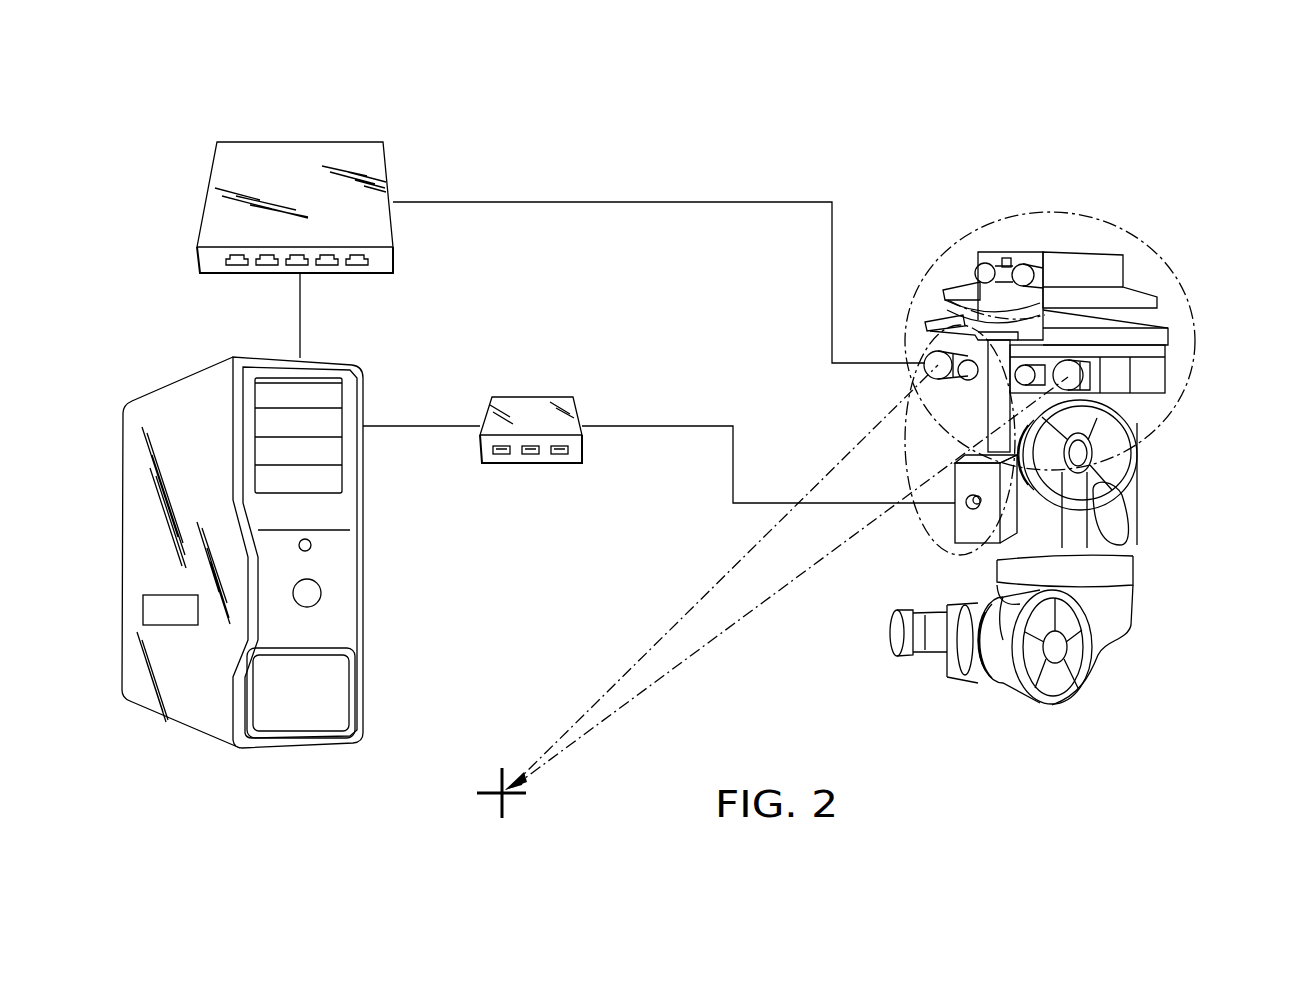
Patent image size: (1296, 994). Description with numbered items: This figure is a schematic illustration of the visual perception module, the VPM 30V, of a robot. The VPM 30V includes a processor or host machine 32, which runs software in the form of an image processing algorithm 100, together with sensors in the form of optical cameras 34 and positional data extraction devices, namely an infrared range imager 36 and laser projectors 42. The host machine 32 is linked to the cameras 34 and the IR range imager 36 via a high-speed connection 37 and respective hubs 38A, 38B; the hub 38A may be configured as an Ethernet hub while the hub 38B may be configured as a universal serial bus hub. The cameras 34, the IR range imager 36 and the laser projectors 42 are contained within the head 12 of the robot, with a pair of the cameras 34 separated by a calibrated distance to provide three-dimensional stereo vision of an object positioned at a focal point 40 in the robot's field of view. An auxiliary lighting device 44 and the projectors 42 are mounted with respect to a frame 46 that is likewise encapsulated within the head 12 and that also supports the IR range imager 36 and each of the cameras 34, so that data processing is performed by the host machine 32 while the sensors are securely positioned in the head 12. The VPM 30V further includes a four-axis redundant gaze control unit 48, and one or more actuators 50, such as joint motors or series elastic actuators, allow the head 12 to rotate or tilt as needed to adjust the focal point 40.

The VPM 30V is at (540, 83).
The hub 38A is at (203, 200).
The hub 38B is at (532, 397).
The high-speed connection 37 is at (607, 202).
The host machine 32 is at (178, 383).
The image processing algorithm 100 is at (170, 610).
The focal point 40 is at (500, 790).
The head 12 is at (1172, 242).
The auxiliary lighting device 44 is at (1006, 260).
The laser projectors 42 is at (960, 337).
The cameras 34 is at (927, 350).
The frame 46 is at (1152, 355).
The IR range imager 36 is at (955, 530).
The gaze control unit 48 is at (1165, 558).
The actuators 50 is at (895, 628).